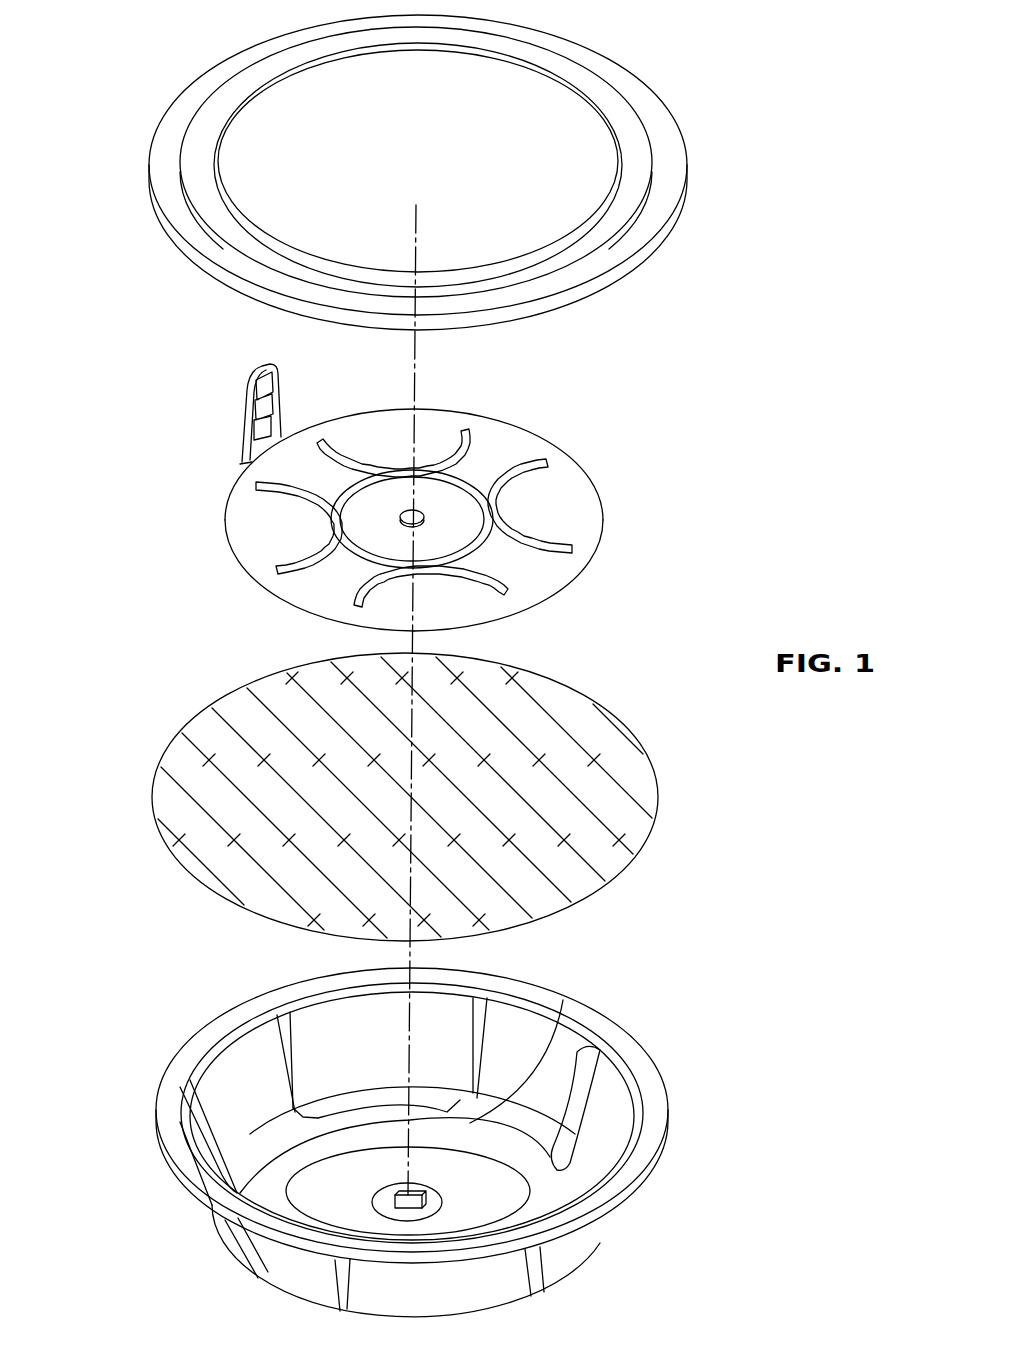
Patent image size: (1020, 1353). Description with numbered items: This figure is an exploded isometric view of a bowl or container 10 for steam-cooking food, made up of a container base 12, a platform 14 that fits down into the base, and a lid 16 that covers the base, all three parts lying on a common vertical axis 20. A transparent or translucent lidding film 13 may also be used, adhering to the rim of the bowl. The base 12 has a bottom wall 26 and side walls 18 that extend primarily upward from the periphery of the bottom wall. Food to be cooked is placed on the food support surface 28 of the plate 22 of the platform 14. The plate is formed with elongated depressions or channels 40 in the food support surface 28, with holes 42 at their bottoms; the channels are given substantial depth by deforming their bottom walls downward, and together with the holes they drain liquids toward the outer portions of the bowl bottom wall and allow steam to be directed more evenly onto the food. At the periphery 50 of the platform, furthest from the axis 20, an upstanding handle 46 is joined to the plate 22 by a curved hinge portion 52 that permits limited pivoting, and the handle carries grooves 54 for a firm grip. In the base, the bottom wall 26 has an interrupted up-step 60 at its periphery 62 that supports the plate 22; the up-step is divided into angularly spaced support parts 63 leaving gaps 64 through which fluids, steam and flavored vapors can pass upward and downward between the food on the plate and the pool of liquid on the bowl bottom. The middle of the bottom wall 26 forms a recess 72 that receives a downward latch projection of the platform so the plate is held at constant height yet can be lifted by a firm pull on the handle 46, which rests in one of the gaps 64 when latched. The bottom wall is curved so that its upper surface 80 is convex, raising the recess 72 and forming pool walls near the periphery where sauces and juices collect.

The container 10 is at (130, 400).
The container base 12 is at (134, 1089).
The lidding film 13 is at (183, 726).
The platform 14 is at (208, 534).
The lid 16 is at (226, 52).
The side walls 18 is at (497, 1032).
The vertical axis 20 is at (418, 362).
The plate 22 is at (552, 439).
The bottom wall 26 is at (407, 1140).
The food support surface 28 is at (555, 580).
The channels 40 is at (545, 537).
The holes 42 is at (517, 537).
The handle 46 is at (258, 381).
The periphery 50 is at (273, 593).
The hinge portion 52 is at (241, 459).
The grooves 54 is at (266, 401).
The interrupted up-step 60 is at (313, 1112).
The periphery 62 is at (542, 1047).
The support parts 63 is at (305, 1105).
The gaps 64 is at (598, 1047).
The recess 72 is at (406, 1195).
The upper surface 80 is at (408, 1191).